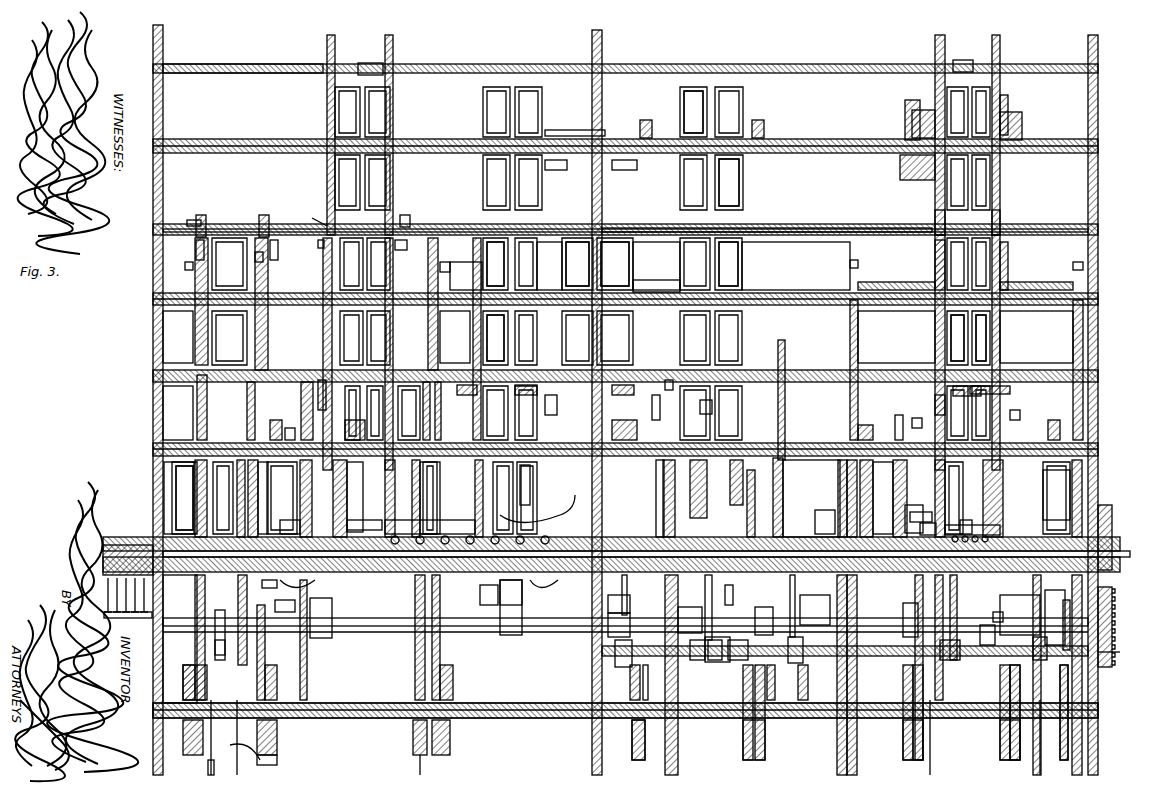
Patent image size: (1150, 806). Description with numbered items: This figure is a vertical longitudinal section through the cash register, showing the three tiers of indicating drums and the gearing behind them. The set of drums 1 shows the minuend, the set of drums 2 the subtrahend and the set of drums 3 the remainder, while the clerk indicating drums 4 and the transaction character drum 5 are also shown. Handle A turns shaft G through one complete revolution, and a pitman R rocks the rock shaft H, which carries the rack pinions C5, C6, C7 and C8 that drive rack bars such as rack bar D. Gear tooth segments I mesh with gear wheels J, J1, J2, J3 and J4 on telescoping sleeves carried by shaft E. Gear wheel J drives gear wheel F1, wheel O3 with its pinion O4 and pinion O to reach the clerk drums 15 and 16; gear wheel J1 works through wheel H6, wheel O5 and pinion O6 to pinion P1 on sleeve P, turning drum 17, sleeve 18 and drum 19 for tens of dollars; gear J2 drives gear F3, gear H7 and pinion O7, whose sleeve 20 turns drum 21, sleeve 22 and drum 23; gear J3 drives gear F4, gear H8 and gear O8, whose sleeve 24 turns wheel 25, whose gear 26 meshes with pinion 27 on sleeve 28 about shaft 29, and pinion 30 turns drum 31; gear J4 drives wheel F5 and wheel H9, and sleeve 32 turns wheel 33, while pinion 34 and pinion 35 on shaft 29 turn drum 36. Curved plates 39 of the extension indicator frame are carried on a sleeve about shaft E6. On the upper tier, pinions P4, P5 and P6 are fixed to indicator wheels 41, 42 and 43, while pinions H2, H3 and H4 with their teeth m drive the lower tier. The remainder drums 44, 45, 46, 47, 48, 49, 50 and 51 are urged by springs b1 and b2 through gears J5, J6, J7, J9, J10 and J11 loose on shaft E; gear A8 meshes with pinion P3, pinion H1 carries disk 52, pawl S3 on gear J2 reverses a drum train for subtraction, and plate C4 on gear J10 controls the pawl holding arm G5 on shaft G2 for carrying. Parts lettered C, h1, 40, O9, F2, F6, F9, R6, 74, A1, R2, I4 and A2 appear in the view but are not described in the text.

The shaft E is at (560, 545).
The rack bar D is at (1117, 537).
The gear shaft C is at (916, 533).
The pinion h1 is at (1115, 655).
The shaft E6 is at (232, 140).
The pinion P1 is at (266, 214).
The sleeve P is at (276, 225).
The pinion 35 is at (661, 412).
The shaft 29 is at (232, 230).
The pinion O is at (205, 429).
The pinion 30 is at (406, 224).
The rack pinion C6 is at (612, 128).
The pinion P3 is at (648, 120).
The slide 40 is at (695, 112).
The pinion P4 is at (760, 120).
The indicator wheel 41 is at (742, 185).
The indicator wheel 42 is at (935, 100).
The indicator wheel 43 is at (1002, 115).
The pinion P6 is at (1034, 118).
The minuend indicating drums 1 is at (917, 174).
The sleeve 28 is at (808, 228).
The pinion 27 is at (935, 220).
The pinion 34 is at (1000, 220).
The pinion O4 is at (189, 249).
The wheel O5 is at (255, 257).
The pinion O6 is at (676, 248).
The drum 36 is at (314, 247).
The drum 31 is at (395, 246).
The pinion O7 is at (446, 262).
The sleeve 20 is at (466, 275).
The drum 21 is at (497, 264).
The drum 17 is at (549, 266).
The clerk indicating drum 15 is at (577, 264).
The clerk indicating drums 4 is at (615, 264).
The clerk indicating drum 16 is at (656, 288).
The sleeve 18 is at (656, 278).
The drum 19 is at (715, 288).
The drum 23 is at (796, 266).
The wheel O3 is at (182, 271).
The gear O8 is at (858, 262).
The sleeve 24 is at (898, 285).
The gear 26 is at (935, 258).
The wheel 33 is at (1013, 265).
The sleeve 32 is at (1038, 285).
The stop O9 is at (1078, 262).
The wheel H6 is at (193, 352).
The gear H7 is at (440, 340).
The sleeve 22 is at (493, 338).
The pinion P5 is at (670, 380).
The gear H8 is at (858, 340).
The wheel 25 is at (950, 332).
The subtrahend indicating drums 2 is at (986, 330).
The wheel H9 is at (1035, 352).
The gear wheel F1 is at (185, 437).
The frame piece F2 is at (278, 426).
The frame piece F6 is at (293, 433).
The gear F3 is at (362, 430).
The pinion H2 is at (627, 403).
The pinion H4 is at (823, 398).
The pinion H1 is at (650, 418).
The gear F4 is at (695, 412).
The frame piece F9 is at (896, 418).
The pin or tooth m is at (963, 411).
The pinion H3 is at (940, 402).
The transaction character drum 5 is at (594, 586).
The remainder indicating drums 3 is at (990, 396).
The wheel F5 is at (1056, 421).
The gear wheel J1 is at (165, 522).
The gear wheel J is at (195, 512).
The gear pinion J5 is at (643, 498).
The gear J2 is at (447, 512).
The gear J4 is at (667, 502).
The drum 51 is at (360, 521).
The drum 49 is at (459, 528).
The gear A8 is at (353, 497).
The drum 45 is at (530, 483).
The drum 47 is at (538, 508).
The drum 44 is at (660, 500).
The drum 46 is at (760, 490).
The gear J3 is at (845, 498).
The plate or flange C4 is at (914, 505).
The drum 48 is at (921, 507).
The rack pinion C5 is at (812, 640).
The drum 50 is at (976, 527).
The gear J9 is at (843, 561).
The spring b1 is at (297, 585).
The disk 52 is at (266, 589).
The pawl S3 is at (321, 610).
The spring b2 is at (544, 590).
The pinion J6 is at (511, 593).
The gear pinion J7 is at (489, 598).
The rod R6 is at (622, 596).
The gear pinion J11 is at (815, 609).
The gear J10 is at (1018, 607).
The shaft G is at (686, 631).
The comb 74 is at (143, 620).
The gear tooth segments I is at (197, 654).
The cam A1 is at (325, 679).
The rod R2 is at (290, 612).
The curved plates 39 is at (636, 650).
The shaft G2 is at (692, 661).
The pawl holding arm G5 is at (713, 661).
The shaft I4 is at (738, 646).
The handle A is at (933, 718).
The cam A2 is at (815, 747).
The rack pinion C7 is at (921, 720).
The rack pinion C8 is at (1012, 720).
The rock shaft H is at (548, 710).
The pitman R is at (253, 761).